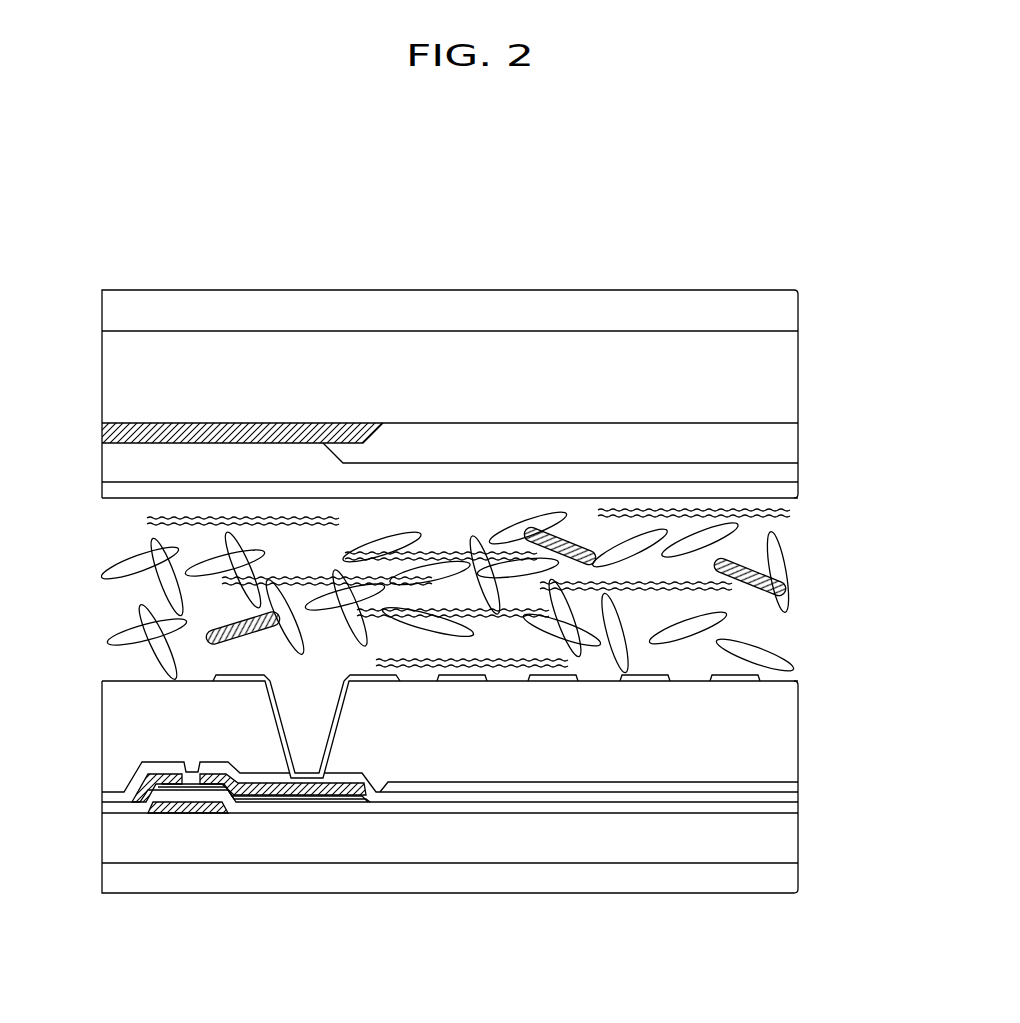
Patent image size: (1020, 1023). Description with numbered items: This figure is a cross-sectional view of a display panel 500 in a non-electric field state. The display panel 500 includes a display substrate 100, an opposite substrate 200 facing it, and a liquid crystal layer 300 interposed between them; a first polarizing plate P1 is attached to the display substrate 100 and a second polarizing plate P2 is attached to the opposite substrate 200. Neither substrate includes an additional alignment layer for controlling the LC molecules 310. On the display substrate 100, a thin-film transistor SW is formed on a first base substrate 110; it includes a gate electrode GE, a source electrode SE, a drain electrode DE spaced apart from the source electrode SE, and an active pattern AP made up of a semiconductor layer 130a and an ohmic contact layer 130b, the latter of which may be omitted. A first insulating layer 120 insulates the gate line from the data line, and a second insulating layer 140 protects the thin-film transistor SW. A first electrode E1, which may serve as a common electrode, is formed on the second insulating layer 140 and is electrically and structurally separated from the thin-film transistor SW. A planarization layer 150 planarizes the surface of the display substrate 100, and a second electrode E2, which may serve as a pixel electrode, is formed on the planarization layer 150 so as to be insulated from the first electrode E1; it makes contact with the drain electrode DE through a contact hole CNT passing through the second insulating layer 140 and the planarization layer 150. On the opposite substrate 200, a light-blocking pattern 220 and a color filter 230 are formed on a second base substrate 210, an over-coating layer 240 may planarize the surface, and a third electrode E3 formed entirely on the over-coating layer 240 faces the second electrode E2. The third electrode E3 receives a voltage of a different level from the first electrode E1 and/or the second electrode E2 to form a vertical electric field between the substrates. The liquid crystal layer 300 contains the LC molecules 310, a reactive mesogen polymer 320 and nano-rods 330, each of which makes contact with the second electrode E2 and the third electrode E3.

The display panel 500 is at (713, 187).
The opposite substrate 200 is at (805, 290).
The second polarizing plate P2 is at (553, 305).
The second base substrate 210 is at (503, 352).
The light-blocking pattern 220 is at (343, 433).
The color filter 230 is at (440, 440).
The over-coating layer 240 is at (270, 463).
The third electrode E3 is at (200, 492).
The liquid crystal layer 300 is at (805, 502).
The LC molecules 310 is at (140, 615).
The reactive mesogen polymer 320 is at (150, 542).
The nano-rods 330 is at (232, 620).
The display substrate 100 is at (805, 683).
The first polarizing plate P1 is at (753, 883).
The first base substrate 110 is at (705, 852).
The gate electrode GE is at (190, 803).
The first insulating layer 120 is at (653, 808).
The semiconductor layer 130a is at (310, 802).
The ohmic contact layer 130b is at (355, 800).
The active pattern AP is at (393, 943).
The source electrode SE is at (147, 802).
The drain electrode DE is at (255, 797).
The thin-film transistor SW is at (138, 976).
The second insulating layer 140 is at (602, 798).
The first electrode E1 is at (552, 790).
The planarization layer 150 is at (502, 777).
The contact hole CNT is at (304, 745).
The second electrode E2 is at (443, 683).